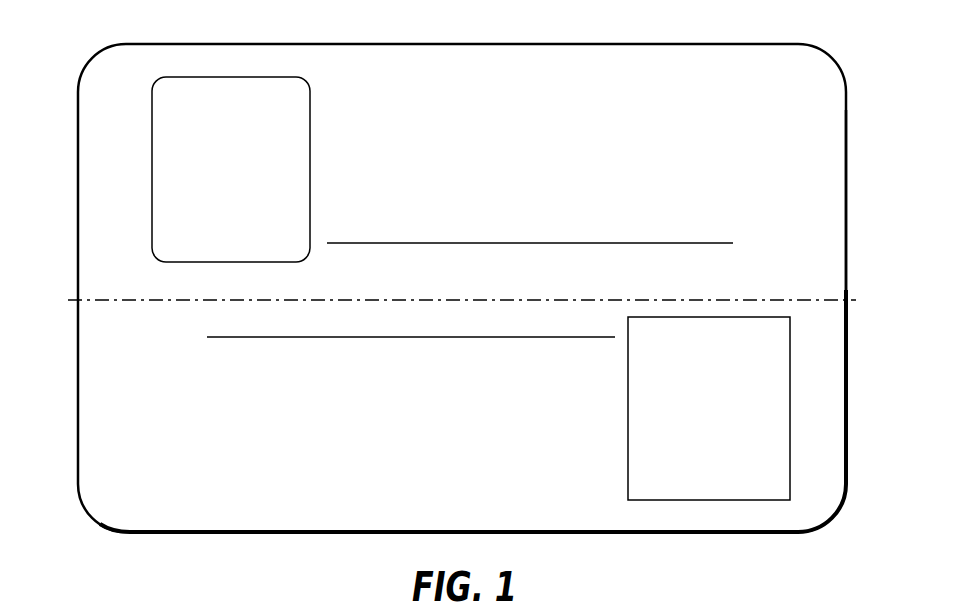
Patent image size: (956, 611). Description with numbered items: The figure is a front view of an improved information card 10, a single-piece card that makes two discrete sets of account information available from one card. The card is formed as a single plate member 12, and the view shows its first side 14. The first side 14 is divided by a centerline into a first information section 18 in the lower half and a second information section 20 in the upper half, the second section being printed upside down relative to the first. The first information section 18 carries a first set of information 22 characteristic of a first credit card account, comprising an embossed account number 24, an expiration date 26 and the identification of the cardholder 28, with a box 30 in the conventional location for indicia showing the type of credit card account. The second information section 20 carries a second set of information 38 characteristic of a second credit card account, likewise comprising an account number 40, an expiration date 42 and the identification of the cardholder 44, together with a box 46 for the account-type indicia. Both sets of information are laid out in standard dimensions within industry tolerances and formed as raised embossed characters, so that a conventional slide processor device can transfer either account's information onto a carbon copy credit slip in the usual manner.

The information card 10 is at (851, 59).
The plate member 12 is at (850, 268).
The first side 14 is at (812, 345).
The first information section 18 is at (105, 320).
The second information section 20 is at (92, 278).
The first set of information 22 is at (387, 431).
The account number 24 is at (694, 360).
The expiration date 26 is at (605, 415).
The identification of the cardholder 28 is at (554, 480).
The box 30 is at (777, 485).
The second set of information 38 is at (435, 159).
The account number 40 is at (789, 178).
The expiration date 42 is at (770, 128).
The identification of the cardholder 44 is at (790, 65).
The box 46 is at (167, 100).